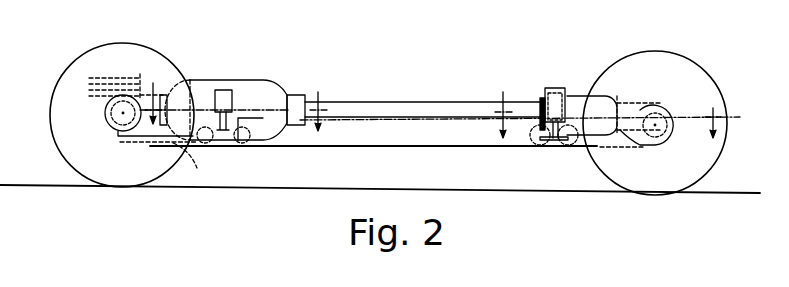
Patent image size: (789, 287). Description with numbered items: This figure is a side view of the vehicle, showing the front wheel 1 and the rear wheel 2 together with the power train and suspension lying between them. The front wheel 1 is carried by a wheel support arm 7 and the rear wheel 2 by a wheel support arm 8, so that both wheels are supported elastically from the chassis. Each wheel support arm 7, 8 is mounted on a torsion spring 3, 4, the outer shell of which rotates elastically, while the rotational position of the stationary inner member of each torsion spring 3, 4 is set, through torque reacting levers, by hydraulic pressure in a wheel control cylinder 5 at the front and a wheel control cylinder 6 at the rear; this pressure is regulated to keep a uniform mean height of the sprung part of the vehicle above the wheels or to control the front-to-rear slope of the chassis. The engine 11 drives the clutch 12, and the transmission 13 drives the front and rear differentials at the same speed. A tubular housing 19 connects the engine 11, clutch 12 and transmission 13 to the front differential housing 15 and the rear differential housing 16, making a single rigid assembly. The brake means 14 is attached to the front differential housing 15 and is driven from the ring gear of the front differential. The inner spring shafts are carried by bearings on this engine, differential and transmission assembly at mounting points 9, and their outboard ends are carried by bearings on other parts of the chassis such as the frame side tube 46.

The front wheel 1 is at (82, 63).
The rear wheel 2 is at (702, 75).
The torsion spring 3 is at (223, 140).
The torsion spring 4 is at (555, 147).
The wheel control cylinder 5 is at (222, 90).
The wheel control cylinder 6 is at (550, 90).
The wheel support arm 7 is at (188, 168).
The wheel support arm 8 is at (615, 150).
The mounting point 9 is at (608, 104).
The engine 11 is at (247, 90).
The clutch 12 is at (555, 92).
The transmission 13 is at (578, 100).
The brake means 14 is at (125, 78).
The front differential housing 15 is at (103, 115).
The rear differential housing 16 is at (676, 140).
The tubular housing 19 is at (450, 108).
The frame side tube 46 is at (443, 143).